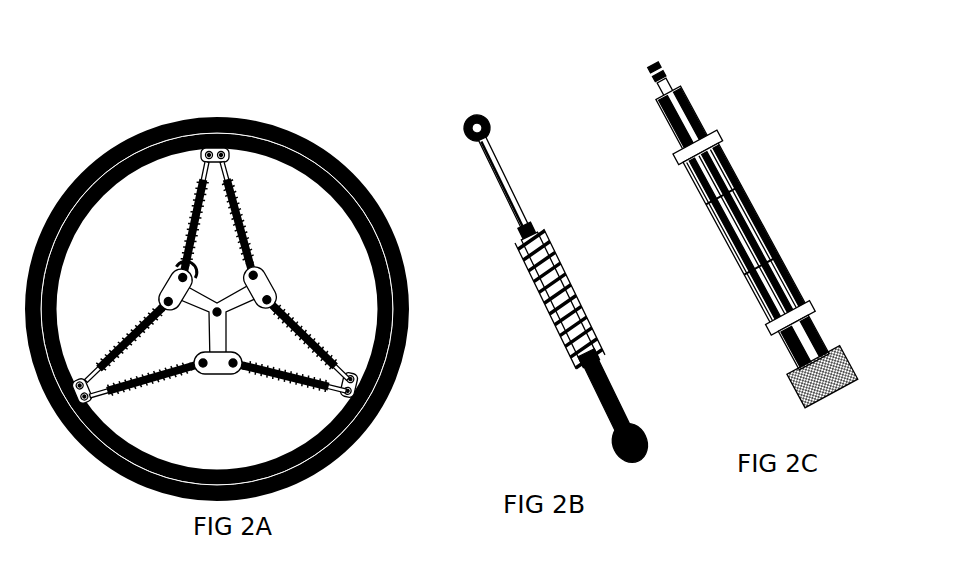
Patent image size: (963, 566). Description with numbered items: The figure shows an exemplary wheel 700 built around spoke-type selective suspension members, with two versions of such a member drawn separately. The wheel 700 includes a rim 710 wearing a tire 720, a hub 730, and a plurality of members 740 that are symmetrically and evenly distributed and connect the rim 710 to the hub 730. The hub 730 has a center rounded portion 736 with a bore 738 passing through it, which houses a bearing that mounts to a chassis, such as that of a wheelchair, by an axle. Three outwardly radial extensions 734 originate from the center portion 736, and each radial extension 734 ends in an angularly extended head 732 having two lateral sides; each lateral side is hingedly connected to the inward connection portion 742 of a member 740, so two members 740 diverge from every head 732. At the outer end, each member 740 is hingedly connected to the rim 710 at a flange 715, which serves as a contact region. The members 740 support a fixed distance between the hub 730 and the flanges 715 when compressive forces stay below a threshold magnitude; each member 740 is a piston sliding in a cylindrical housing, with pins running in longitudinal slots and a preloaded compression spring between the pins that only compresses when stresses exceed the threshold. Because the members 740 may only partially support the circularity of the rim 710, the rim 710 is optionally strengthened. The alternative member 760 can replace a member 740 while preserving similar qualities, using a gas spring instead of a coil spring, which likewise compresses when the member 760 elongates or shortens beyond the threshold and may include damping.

In FIG. 2A, the wheel 700 is at (182, 100).
In FIG. 2A, the rim 710 is at (292, 133).
In FIG. 2A, the flange 715 is at (357, 380).
In FIG. 2A, the tire 720 is at (227, 122).
In FIG. 2A, the hub 730 is at (237, 295).
In FIG. 2A, the angularly extended head 732 is at (263, 283).
In FIG. 2A, the radial extension 734 is at (193, 293).
In FIG. 2A, the center rounded portion 736 is at (203, 318).
In FIG. 2A, the bore 738 is at (223, 313).
In FIG. 2A, the spoke type selective suspension member 740 is at (433, 326).
In FIG. 2B, the spoke type selective suspension member 740 is at (524, 375).
In FIG. 2B, the inward connection portion 742 is at (454, 100).
In FIG. 2C, the member 760 is at (758, 98).